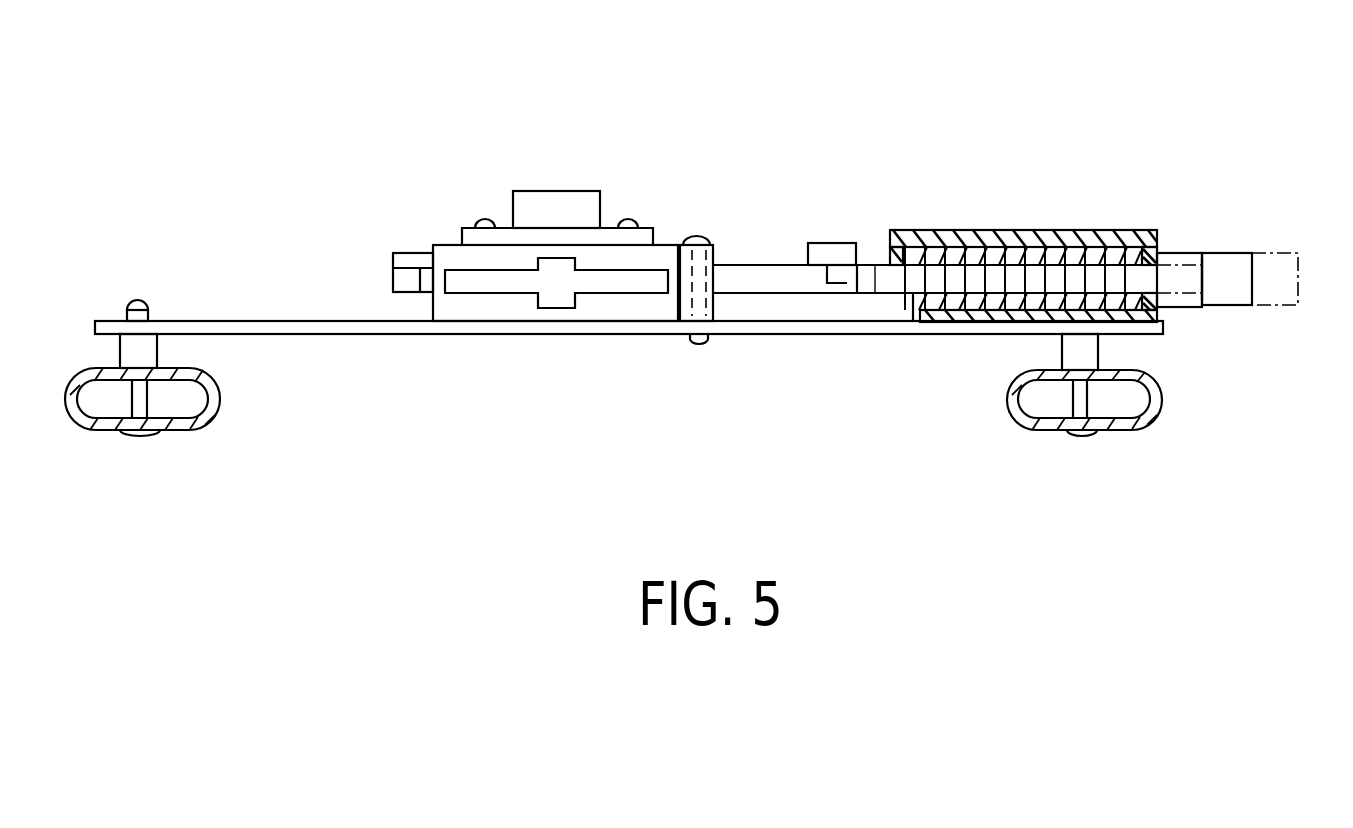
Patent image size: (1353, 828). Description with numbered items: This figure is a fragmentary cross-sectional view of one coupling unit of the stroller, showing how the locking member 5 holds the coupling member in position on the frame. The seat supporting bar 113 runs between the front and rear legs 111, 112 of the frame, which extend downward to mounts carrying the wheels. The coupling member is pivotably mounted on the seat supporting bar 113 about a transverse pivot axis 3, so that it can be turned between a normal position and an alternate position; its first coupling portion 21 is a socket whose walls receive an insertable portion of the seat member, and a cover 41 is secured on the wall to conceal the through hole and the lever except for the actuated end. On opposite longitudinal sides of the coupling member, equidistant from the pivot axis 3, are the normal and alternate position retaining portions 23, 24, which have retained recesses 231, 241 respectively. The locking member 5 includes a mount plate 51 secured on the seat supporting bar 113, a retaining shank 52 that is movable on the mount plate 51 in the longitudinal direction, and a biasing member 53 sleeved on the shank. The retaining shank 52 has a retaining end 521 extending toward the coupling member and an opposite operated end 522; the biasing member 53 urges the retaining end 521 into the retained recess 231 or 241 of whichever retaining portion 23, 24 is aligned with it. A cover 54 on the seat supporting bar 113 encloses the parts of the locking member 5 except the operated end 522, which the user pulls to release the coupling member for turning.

The pivot axis 3 is at (699, 236).
The locking member 5 is at (1180, 250).
The first coupling portion 21 is at (645, 318).
The normal position retaining portion 23 is at (767, 263).
The alternate position retaining portion 24 is at (410, 253).
The cover 41 is at (562, 192).
The mount plate 51 is at (1000, 318).
The retaining shank 52 is at (1283, 258).
The biasing member 53 is at (985, 246).
The cover 54 is at (1030, 243).
The front leg 111 is at (215, 412).
The rear leg 112 is at (1125, 426).
The seat supporting bar 113 is at (742, 327).
The retained recess 231 is at (822, 280).
The retained recess 241 is at (420, 270).
The retaining end 521 is at (832, 284).
The operated end 522 is at (1218, 296).